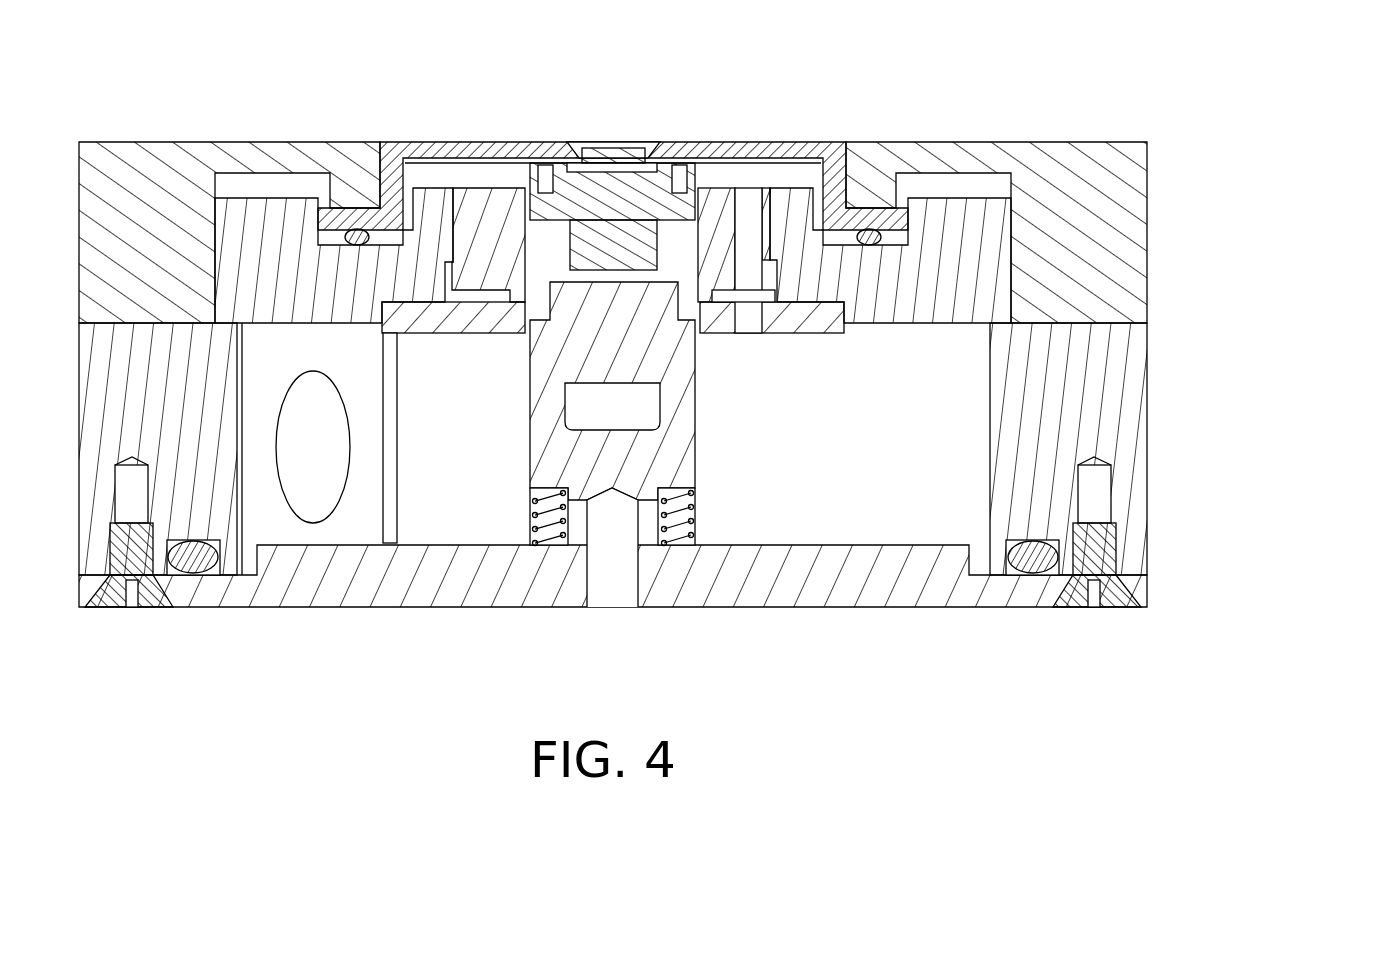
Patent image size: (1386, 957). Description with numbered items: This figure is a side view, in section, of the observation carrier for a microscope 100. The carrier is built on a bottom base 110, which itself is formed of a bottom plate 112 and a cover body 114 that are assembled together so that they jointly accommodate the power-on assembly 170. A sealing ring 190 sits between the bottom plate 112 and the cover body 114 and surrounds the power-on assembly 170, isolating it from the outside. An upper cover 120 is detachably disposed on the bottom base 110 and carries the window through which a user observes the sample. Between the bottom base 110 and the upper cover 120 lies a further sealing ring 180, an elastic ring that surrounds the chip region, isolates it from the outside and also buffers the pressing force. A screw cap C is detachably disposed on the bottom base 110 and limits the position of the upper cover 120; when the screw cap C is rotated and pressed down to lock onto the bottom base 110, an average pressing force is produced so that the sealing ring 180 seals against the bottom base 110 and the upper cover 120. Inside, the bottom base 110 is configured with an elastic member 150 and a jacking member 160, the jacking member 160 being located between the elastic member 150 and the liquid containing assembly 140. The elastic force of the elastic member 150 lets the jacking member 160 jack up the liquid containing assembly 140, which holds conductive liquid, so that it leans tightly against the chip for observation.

The observation carrier for a microscope 100 is at (702, 369).
The bottom base 110 is at (702, 397).
The bottom plate 112 is at (898, 568).
The cover body 114 is at (1077, 395).
The upper cover 120 is at (822, 200).
The liquid containing assembly 140 is at (606, 228).
The elastic member 150 is at (688, 527).
The jacking member 160 is at (660, 353).
The power-on assembly 170 is at (492, 222).
The sealing ring 180 is at (357, 232).
The sealing ring 190 is at (193, 573).
The screw cap C is at (1118, 235).